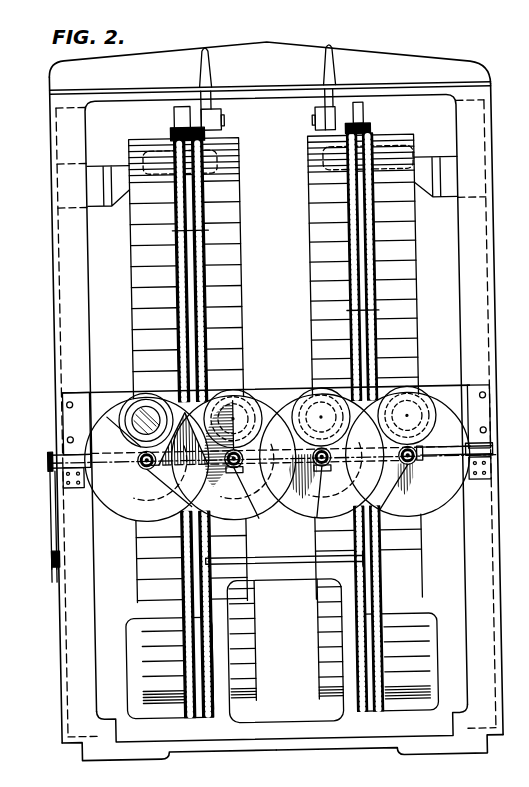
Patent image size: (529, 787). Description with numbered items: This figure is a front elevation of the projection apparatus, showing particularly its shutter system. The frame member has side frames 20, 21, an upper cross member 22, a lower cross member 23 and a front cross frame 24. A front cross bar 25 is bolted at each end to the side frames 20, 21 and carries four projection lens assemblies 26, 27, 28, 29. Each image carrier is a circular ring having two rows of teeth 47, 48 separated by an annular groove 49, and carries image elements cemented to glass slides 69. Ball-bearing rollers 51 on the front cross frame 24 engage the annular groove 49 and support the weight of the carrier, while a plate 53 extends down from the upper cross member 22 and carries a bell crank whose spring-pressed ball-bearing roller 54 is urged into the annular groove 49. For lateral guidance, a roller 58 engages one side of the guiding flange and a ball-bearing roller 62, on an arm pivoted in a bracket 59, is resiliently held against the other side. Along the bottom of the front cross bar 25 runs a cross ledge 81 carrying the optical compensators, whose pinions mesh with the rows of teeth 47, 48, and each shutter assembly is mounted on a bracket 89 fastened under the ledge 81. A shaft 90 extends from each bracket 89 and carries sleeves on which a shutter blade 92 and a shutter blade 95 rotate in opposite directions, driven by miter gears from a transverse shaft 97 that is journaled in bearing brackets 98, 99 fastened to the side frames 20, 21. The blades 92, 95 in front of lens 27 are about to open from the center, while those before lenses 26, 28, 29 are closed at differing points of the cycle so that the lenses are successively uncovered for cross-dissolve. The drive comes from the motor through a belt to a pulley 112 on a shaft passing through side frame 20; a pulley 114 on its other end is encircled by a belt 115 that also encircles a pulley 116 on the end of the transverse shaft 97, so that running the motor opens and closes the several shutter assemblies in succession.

The side frame 20 is at (63, 278).
The side frame 21 is at (483, 291).
The upper cross member 22 is at (270, 43).
The lower cross member 23 is at (133, 750).
The front cross frame 24 is at (215, 735).
The front cross bar 25 is at (447, 391).
The projection lens assembly 26 is at (128, 393).
The projection lens assembly 27 is at (246, 388).
The projection lens assembly 28 is at (305, 395).
The projection lens assembly 29 is at (420, 386).
The row of teeth 47 is at (177, 122).
The row of teeth 48 is at (378, 130).
The annular groove 49 is at (182, 229).
The ball-bearing roller 51 is at (195, 571).
The plate 53 is at (300, 100).
The ball-bearing roller 54 is at (369, 112).
The roller 58 is at (146, 135).
The bracket 59 is at (100, 167).
The ball-bearing roller 62 is at (218, 152).
The glass slide 69 is at (140, 314).
The cross ledge 81 is at (457, 449).
The bracket 89 is at (412, 468).
The shaft 90 is at (289, 512).
The shutter blade 92 is at (213, 415).
The shutter blade 95 is at (123, 505).
The transverse shaft 97 is at (433, 460).
The bearing bracket 98 is at (74, 485).
The bearing bracket 99 is at (470, 483).
The pulley 112 is at (59, 562).
The pulley 114 is at (50, 566).
The belt 115 is at (50, 544).
The pulley 116 is at (49, 448).